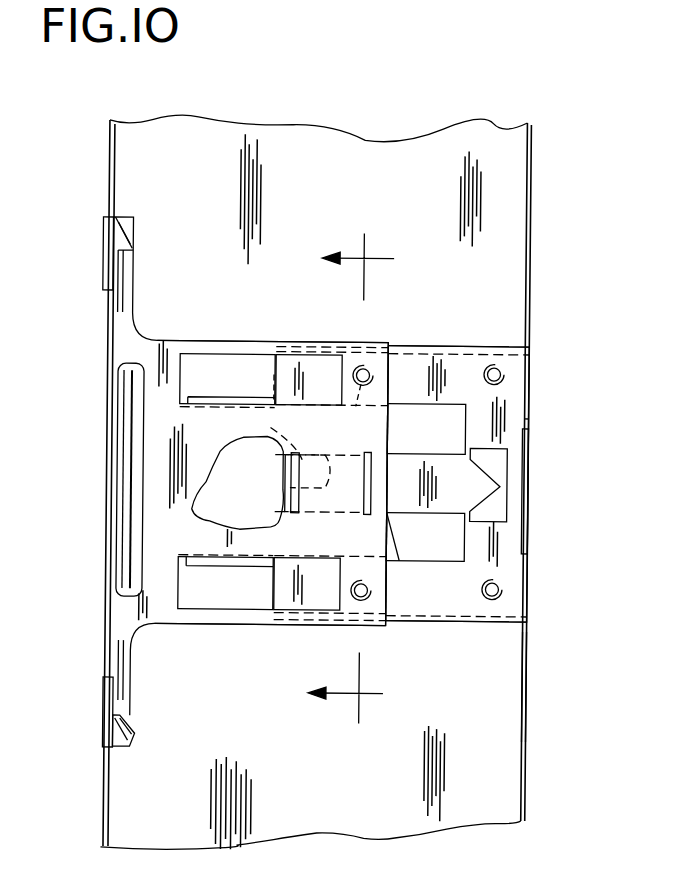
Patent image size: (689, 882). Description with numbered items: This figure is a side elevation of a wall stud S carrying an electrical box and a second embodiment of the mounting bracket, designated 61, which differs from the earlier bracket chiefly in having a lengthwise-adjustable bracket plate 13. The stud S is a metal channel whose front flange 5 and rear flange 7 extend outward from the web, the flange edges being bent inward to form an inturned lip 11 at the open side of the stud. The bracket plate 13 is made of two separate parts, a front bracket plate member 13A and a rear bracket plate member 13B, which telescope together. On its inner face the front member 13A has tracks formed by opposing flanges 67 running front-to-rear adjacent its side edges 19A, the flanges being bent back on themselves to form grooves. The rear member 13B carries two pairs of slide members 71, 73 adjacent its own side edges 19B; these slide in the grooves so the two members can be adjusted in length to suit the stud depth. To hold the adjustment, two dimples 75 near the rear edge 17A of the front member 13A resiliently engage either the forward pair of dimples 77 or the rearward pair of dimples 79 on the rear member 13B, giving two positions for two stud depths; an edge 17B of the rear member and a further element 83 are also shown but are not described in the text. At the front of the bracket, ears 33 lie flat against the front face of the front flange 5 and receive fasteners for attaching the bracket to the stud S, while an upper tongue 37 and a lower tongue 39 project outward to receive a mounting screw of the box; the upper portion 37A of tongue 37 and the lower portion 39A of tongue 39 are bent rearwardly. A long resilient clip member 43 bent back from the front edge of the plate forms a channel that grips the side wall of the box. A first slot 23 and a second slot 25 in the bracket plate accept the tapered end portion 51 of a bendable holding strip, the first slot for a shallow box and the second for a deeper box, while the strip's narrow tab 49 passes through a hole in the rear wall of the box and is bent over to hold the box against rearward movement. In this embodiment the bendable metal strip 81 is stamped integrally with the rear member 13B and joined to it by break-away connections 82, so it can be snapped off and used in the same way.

The front flange 5 is at (107, 180).
The stud S is at (358, 162).
The rear flange 7 is at (529, 196).
The inturned lip 11 is at (351, 476).
The bracket plate 13 is at (333, 634).
The front bracket plate member 13A is at (183, 532).
The rear bracket plate member 13B is at (518, 568).
The rear edge 17A is at (405, 372).
The bracket wall 17B is at (529, 417).
The side edges 19A is at (254, 354).
The slot 19B is at (410, 352).
The first slot 23 is at (295, 515).
The second slot 25 is at (362, 512).
The ears 33 is at (102, 242).
The upper tongue 37 is at (110, 264).
The upper portion of upper tongue 37A is at (123, 240).
The lower tongue 39 is at (110, 718).
The lower portion of lower tongue 39A is at (127, 748).
The clip member 43 is at (121, 498).
The tab 49 is at (261, 467).
The tapered end portion 51 is at (492, 483).
The bracket 61 is at (560, 412).
The opposing flanges 67 is at (322, 353).
The slide members 71 is at (490, 355).
The slide members 73 is at (452, 622).
The dimples 75 is at (368, 365).
The dimples of forward pair 77 is at (358, 580).
The dimples of rearward pair 79 is at (502, 372).
The bendable metal strip 81 is at (400, 522).
The break-away connections 82 is at (468, 453).
The wedge 83 is at (529, 487).